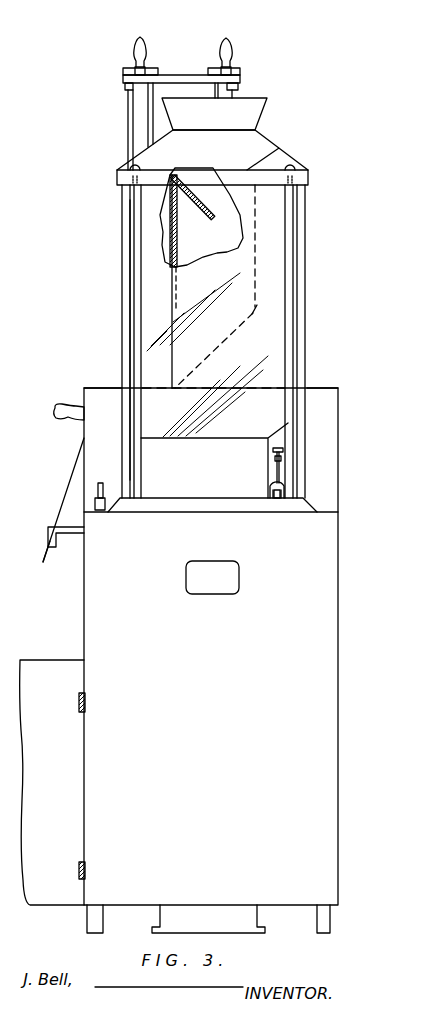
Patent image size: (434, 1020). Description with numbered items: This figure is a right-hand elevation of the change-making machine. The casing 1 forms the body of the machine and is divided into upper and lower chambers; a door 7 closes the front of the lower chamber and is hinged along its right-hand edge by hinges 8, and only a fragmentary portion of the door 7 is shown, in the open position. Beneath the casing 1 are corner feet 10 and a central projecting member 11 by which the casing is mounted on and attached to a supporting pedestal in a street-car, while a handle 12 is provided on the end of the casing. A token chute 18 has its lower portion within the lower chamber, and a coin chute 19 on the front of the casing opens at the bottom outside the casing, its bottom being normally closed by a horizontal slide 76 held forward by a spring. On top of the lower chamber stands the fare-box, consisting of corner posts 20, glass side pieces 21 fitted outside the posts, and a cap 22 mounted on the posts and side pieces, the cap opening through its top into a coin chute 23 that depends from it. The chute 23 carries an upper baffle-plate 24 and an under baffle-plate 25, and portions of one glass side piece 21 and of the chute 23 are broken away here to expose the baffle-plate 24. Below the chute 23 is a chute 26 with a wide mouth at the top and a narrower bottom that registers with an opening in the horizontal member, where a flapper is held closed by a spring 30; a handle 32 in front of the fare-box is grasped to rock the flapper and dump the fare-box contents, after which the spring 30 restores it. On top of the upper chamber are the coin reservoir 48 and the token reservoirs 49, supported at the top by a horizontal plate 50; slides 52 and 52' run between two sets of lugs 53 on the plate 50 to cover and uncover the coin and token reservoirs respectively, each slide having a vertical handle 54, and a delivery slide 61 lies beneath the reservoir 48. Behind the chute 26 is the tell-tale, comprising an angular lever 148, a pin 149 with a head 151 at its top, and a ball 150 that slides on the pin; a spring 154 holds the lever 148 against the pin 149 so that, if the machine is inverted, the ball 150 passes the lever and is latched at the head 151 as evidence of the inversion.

The casing 1 is at (211, 646).
The door 7 is at (52, 782).
The hinges 8 is at (85, 700).
The feet 10 is at (87, 925).
The projecting member 11 is at (208, 919).
The handles 12 is at (212, 577).
The token chute 18 is at (36, 561).
The coin chute 19 is at (73, 483).
The corner posts 20 is at (135, 330).
The glass side pieces 21 is at (143, 302).
The cap 22 is at (212, 157).
The coin chute 23 is at (330, 283).
The upper baffle-plate 24 is at (208, 208).
The under baffle-plate 25 is at (220, 343).
The chute 26 is at (258, 467).
The spring 30 is at (97, 505).
The handle 32 is at (98, 490).
The coin reservoir 48 is at (142, 118).
The token reservoirs 49 is at (222, 95).
The horizontal plate 50 is at (181, 79).
The slide 52 is at (122, 68).
The slide 52' is at (246, 70).
The lugs 53 is at (148, 68).
The vertical handle 54 is at (140, 37).
The delivery slide 61 is at (73, 421).
The horizontal slide 76 is at (75, 533).
The lever 148 is at (282, 472).
The pin 149 is at (280, 458).
The ball 150 is at (268, 484).
The head 151 is at (282, 447).
The spring 154 is at (277, 498).